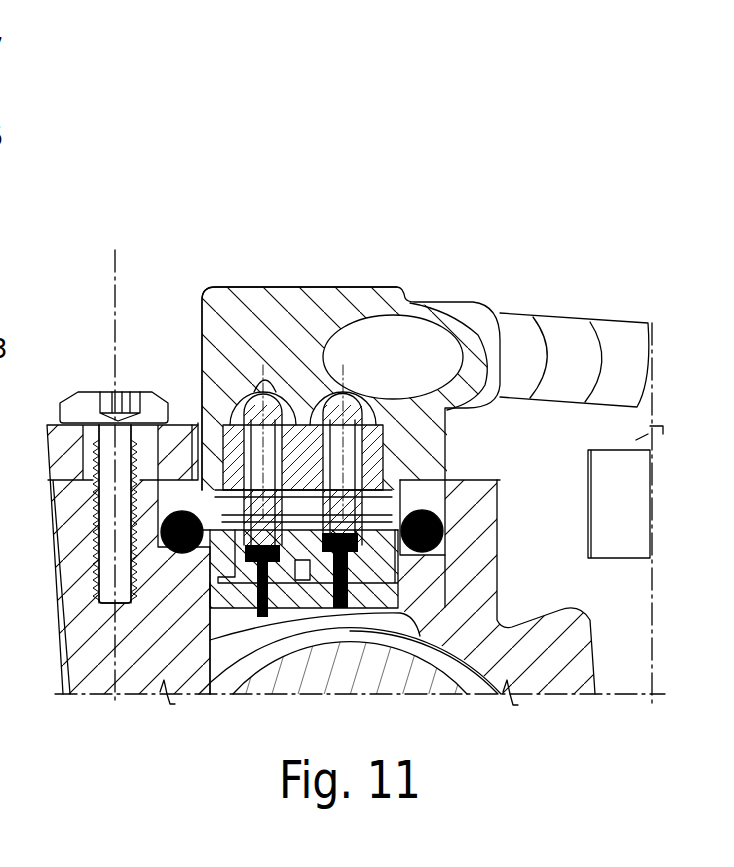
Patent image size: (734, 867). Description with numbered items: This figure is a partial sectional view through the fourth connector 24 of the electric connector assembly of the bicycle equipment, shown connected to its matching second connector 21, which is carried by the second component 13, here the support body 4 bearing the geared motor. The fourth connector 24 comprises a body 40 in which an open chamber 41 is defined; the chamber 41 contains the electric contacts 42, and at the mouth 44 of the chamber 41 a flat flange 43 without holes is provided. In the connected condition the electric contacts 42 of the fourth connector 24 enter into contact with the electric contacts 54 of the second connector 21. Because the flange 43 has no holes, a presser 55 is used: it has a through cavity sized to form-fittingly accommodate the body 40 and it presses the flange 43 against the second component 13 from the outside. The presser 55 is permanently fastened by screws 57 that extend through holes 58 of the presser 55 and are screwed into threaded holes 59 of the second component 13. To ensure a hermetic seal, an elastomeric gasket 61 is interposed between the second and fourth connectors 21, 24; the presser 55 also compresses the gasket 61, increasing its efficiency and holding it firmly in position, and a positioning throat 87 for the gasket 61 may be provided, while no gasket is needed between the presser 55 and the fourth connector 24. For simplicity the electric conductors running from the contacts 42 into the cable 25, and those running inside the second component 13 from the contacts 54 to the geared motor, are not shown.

The fourth connector 24 is at (347, 252).
The body 40 is at (380, 305).
The cable 25 is at (577, 342).
The mouth 44 is at (234, 492).
The electric contacts 42 is at (333, 432).
The flange 43 is at (223, 495).
The holes 58 is at (100, 395).
The presser 55 is at (67, 448).
The screws 57 is at (123, 543).
The second connector 21 is at (100, 610).
The open chamber 41 is at (370, 465).
The threaded holes 59 is at (195, 587).
The electric contacts 54 is at (262, 598).
The gasket 61 is at (433, 550).
The positioning throat 87 is at (440, 505).
The support body 4 is at (580, 647).
The second component 13 is at (350, 668).